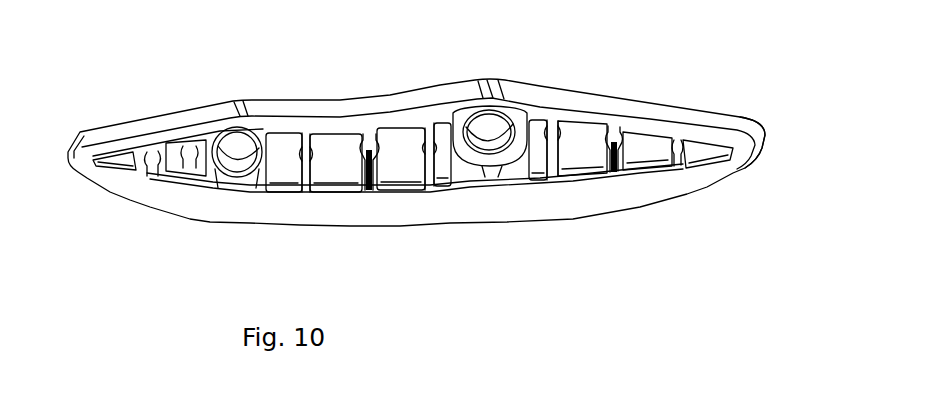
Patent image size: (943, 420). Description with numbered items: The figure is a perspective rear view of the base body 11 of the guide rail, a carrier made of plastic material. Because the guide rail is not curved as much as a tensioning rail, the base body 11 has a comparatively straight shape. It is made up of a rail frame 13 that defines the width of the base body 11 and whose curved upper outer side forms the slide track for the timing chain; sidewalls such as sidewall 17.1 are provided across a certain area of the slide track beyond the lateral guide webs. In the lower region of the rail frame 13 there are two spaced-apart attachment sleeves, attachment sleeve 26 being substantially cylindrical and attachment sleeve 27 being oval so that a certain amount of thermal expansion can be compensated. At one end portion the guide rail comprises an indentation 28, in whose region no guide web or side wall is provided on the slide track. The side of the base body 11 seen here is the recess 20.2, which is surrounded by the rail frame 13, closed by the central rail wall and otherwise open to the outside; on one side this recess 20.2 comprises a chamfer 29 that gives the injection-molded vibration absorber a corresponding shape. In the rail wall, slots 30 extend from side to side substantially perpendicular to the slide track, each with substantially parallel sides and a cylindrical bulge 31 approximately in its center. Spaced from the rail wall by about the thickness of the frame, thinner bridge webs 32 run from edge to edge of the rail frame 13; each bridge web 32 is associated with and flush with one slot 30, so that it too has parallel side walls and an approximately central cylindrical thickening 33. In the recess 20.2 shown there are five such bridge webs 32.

The base body 11 is at (478, 243).
The rail frame 13 is at (667, 117).
The sidewall 17.1 is at (643, 199).
The recess 20.2 is at (402, 140).
The attachment sleeve 26 is at (252, 128).
The attachment sleeve 27 is at (500, 123).
The indentation 28 is at (724, 108).
The chamfer 29 is at (351, 172).
The slot 30 is at (363, 136).
The cylindrical bulge 31 is at (378, 146).
The bridge web 32 is at (697, 140).
The cylindrical thickening 33 is at (745, 166).